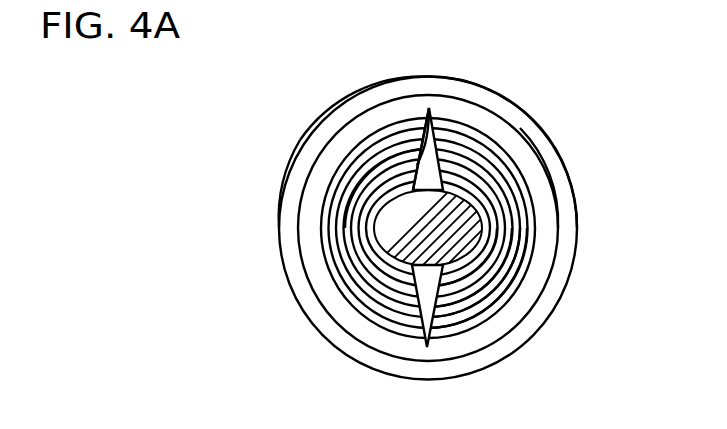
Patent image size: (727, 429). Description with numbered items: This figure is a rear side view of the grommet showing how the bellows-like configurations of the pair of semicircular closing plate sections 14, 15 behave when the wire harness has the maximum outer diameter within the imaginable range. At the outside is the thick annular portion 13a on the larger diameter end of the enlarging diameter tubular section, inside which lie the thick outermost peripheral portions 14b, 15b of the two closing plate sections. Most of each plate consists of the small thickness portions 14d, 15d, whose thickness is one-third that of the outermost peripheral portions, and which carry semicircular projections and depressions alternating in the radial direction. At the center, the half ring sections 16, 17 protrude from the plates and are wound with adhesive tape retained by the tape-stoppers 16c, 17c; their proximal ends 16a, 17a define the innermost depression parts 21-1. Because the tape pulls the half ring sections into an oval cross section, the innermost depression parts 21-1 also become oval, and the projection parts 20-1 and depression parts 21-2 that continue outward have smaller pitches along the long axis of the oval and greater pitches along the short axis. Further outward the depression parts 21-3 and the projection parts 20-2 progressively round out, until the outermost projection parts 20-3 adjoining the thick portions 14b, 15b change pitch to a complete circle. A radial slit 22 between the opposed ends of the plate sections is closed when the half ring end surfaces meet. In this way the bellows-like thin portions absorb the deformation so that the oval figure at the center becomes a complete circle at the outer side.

The annular portion 13a is at (503, 118).
The semicircular closing plate section 14 is at (533, 205).
The outermost peripheral portion 14b is at (527, 120).
The small thickness portion 14d is at (563, 180).
The semicircular closing plate section 15 is at (308, 225).
The outermost peripheral portion 15b is at (352, 118).
The small thickness portion 15d is at (322, 205).
The half ring section 16 is at (487, 226).
The proximal end 16a is at (462, 155).
The tape-stopper 16c is at (505, 172).
The half ring section 17 is at (355, 230).
The proximal end 17a is at (413, 190).
The tape-stopper 17c is at (357, 187).
The innermost projection part 20-1 is at (458, 282).
The intermediate projection part 20-2 is at (500, 318).
The outermost projection part 20-3 is at (490, 290).
The innermost depression part 21-1 is at (503, 297).
The intermediate depression part 21-2 is at (498, 258).
The outermost depression part 21-3 is at (522, 250).
The slit 22 is at (437, 160).